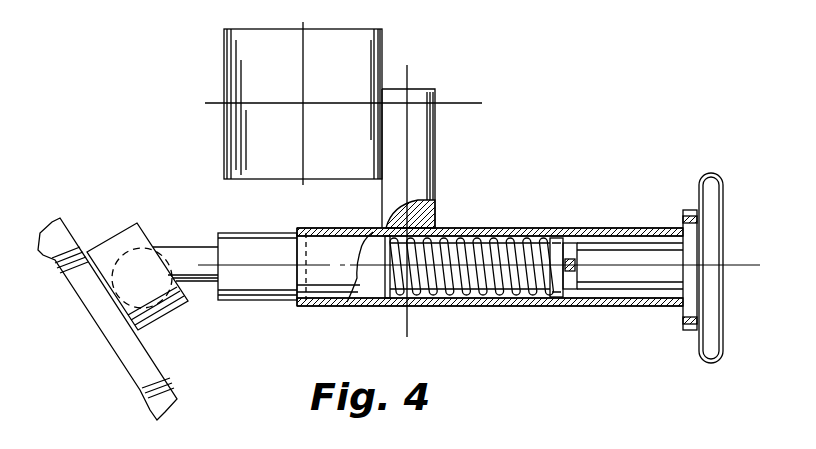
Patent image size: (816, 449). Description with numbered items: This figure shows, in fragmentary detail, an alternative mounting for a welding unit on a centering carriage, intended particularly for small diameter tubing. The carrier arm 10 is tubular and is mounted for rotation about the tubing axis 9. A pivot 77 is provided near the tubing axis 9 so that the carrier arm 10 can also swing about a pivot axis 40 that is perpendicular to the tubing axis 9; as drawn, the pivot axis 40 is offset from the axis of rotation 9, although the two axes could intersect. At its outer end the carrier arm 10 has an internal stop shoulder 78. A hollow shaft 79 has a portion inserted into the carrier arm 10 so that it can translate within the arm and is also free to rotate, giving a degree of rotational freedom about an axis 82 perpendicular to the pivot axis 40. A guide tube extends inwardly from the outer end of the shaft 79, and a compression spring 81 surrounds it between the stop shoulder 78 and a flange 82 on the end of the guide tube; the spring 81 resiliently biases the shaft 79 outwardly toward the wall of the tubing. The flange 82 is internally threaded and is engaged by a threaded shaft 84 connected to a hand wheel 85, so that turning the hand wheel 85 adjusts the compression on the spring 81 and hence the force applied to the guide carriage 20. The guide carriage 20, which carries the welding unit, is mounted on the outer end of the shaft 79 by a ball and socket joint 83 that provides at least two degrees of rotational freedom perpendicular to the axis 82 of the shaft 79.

The tubing axis 9 is at (303, 103).
The pivot axis 40 is at (407, 70).
The pivot 77 is at (436, 134).
The internal stop shoulder 78 is at (306, 300).
The hollow shaft 79 is at (272, 215).
The carrier arm 10 is at (438, 228).
The compression spring 81 is at (427, 307).
The flange 82 is at (562, 298).
The threaded shaft 84 is at (574, 262).
The hand wheel 85 is at (699, 340).
The ball and socket joint 83 is at (142, 245).
The guide carriage 20 is at (68, 224).